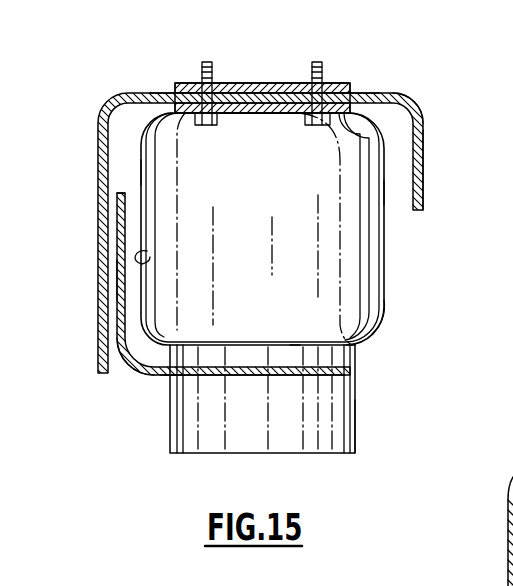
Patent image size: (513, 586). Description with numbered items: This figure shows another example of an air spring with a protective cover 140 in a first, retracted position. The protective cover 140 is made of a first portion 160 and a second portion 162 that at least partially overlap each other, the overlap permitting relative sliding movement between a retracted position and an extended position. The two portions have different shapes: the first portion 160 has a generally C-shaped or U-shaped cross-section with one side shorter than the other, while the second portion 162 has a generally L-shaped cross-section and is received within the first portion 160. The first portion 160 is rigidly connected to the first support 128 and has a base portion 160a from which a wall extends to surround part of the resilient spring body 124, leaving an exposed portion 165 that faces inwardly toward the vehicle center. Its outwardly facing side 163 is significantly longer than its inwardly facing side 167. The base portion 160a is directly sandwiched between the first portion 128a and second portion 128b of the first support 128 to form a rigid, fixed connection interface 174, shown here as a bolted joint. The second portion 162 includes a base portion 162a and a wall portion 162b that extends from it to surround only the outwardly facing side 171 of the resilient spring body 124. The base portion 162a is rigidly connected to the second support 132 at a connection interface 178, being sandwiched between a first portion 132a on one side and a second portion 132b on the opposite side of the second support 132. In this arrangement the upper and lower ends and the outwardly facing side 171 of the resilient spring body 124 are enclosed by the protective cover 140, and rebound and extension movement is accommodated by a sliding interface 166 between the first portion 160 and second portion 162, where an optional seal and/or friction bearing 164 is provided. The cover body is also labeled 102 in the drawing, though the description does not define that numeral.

The cover 102 is at (135, 308).
The resilient spring body 124 is at (352, 347).
The first support 128 is at (334, 83).
The first portion of first support 128a is at (296, 83).
The second portion of first support 128b is at (259, 113).
The second support 132 is at (280, 438).
The first portion of second support 132a is at (333, 437).
The second portion of second support 132b is at (293, 358).
The protective cover 140 is at (427, 90).
The first portion 160 is at (112, 98).
The base portion 160a is at (372, 93).
The second portion 162 is at (150, 376).
The base portion 162a is at (253, 376).
The wall portion 162b is at (120, 285).
The outwardly facing side 163 is at (98, 240).
The seal and/or friction bearing 164 is at (114, 196).
The exposed portion 165 is at (384, 312).
The sliding interface 166 is at (142, 172).
The inwardly facing side 167 is at (425, 167).
The outwardly facing side 171 is at (147, 251).
The connection interface 174 is at (188, 78).
The connection interface 178 is at (169, 387).